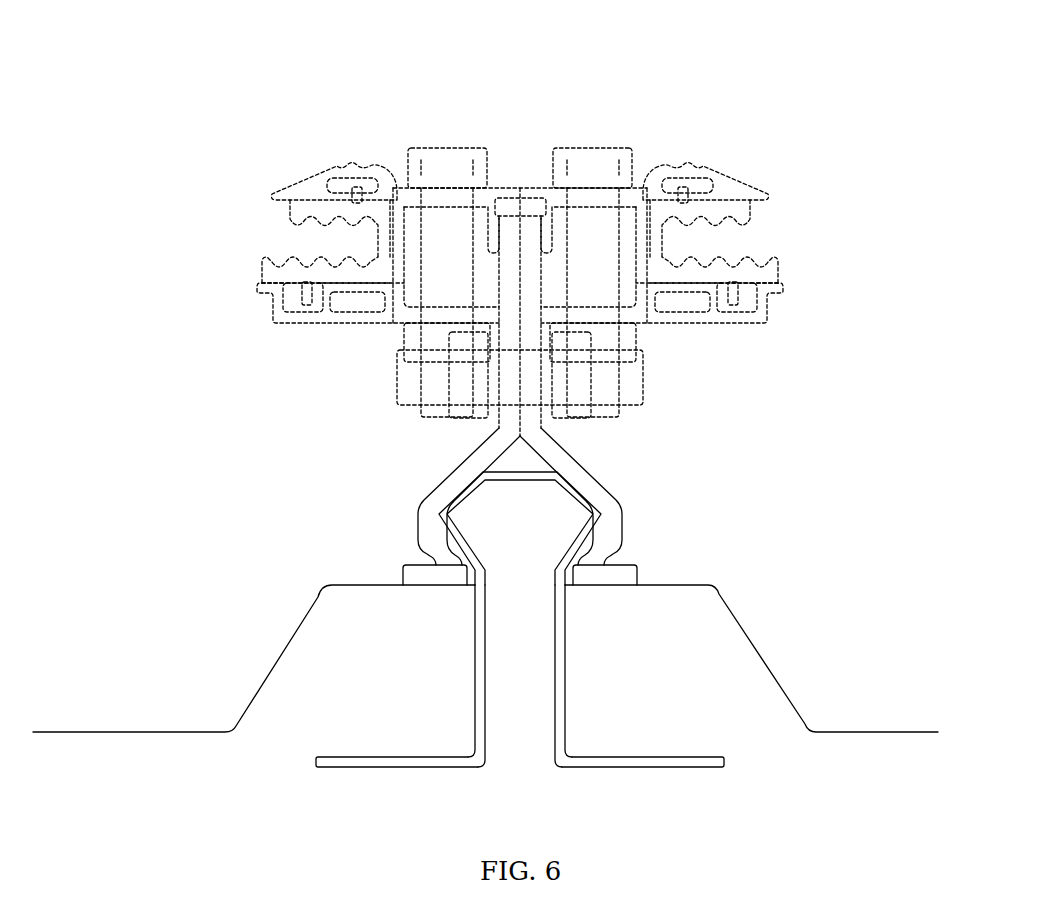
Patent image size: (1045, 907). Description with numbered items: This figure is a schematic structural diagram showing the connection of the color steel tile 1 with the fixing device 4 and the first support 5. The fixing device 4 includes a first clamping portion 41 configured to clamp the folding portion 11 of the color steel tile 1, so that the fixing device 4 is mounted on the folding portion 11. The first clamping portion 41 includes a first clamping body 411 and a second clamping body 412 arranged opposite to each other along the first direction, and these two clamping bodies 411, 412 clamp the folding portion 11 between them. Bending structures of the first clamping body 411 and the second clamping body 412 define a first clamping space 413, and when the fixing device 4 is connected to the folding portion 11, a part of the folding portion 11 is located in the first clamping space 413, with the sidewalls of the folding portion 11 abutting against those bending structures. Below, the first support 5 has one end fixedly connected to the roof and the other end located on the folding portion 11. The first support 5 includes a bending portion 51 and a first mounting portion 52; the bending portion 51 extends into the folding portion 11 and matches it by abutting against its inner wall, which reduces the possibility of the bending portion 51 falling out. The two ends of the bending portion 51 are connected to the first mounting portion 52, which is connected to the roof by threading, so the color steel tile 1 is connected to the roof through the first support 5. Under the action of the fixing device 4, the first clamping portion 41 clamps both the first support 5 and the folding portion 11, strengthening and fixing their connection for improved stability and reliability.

The color steel tile 1 is at (688, 583).
The folding portion 11 is at (505, 465).
The fixing device 4 is at (517, 88).
The first clamping portion 41 is at (668, 426).
The first clamping body 411 is at (462, 480).
The second clamping body 412 is at (597, 505).
The first clamping space 413 is at (533, 458).
The first support 5 is at (474, 628).
The bending portion 51 is at (517, 482).
The first mounting portion 52 is at (368, 767).